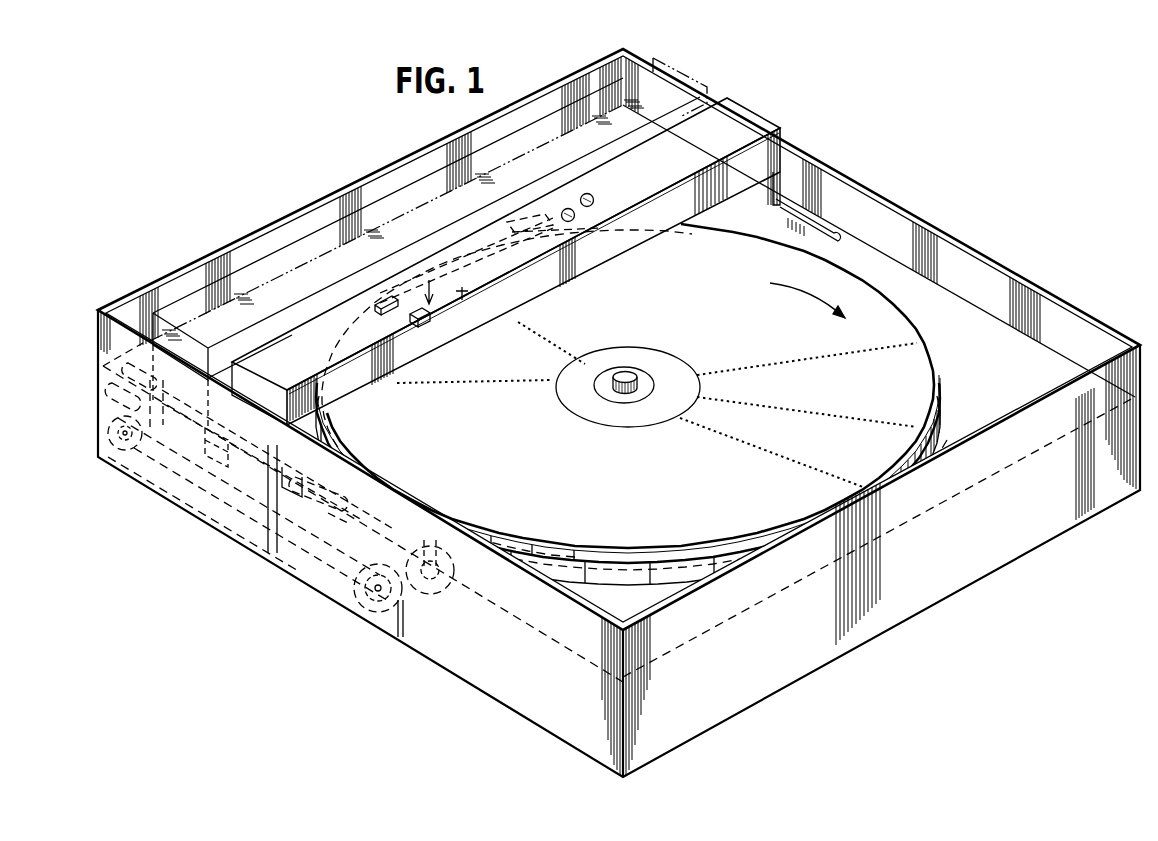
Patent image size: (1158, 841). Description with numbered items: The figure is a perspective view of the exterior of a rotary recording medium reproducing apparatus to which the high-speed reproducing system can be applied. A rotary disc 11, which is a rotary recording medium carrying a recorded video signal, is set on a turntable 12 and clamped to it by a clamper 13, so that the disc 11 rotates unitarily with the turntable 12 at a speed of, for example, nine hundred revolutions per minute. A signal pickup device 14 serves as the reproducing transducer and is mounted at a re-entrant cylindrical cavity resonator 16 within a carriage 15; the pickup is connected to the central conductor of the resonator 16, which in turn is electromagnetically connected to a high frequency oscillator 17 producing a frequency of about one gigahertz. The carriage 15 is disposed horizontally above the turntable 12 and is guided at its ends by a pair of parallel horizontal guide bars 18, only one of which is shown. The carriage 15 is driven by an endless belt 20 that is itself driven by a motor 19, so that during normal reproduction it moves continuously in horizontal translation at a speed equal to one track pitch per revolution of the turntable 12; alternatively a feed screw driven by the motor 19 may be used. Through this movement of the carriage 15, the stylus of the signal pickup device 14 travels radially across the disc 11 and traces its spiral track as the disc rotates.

The rotary disc 11 is at (920, 372).
The turntable 12 is at (607, 578).
The clamper 13 is at (618, 393).
The signal pickup device 14 is at (463, 297).
The carriage 15 is at (385, 193).
The re-entrant cylindrical cavity resonator 16 is at (563, 277).
The high frequency oscillator 17 is at (676, 218).
The guide bars 18 is at (293, 527).
The motor 19 is at (455, 568).
The endless belt 20 is at (345, 560).